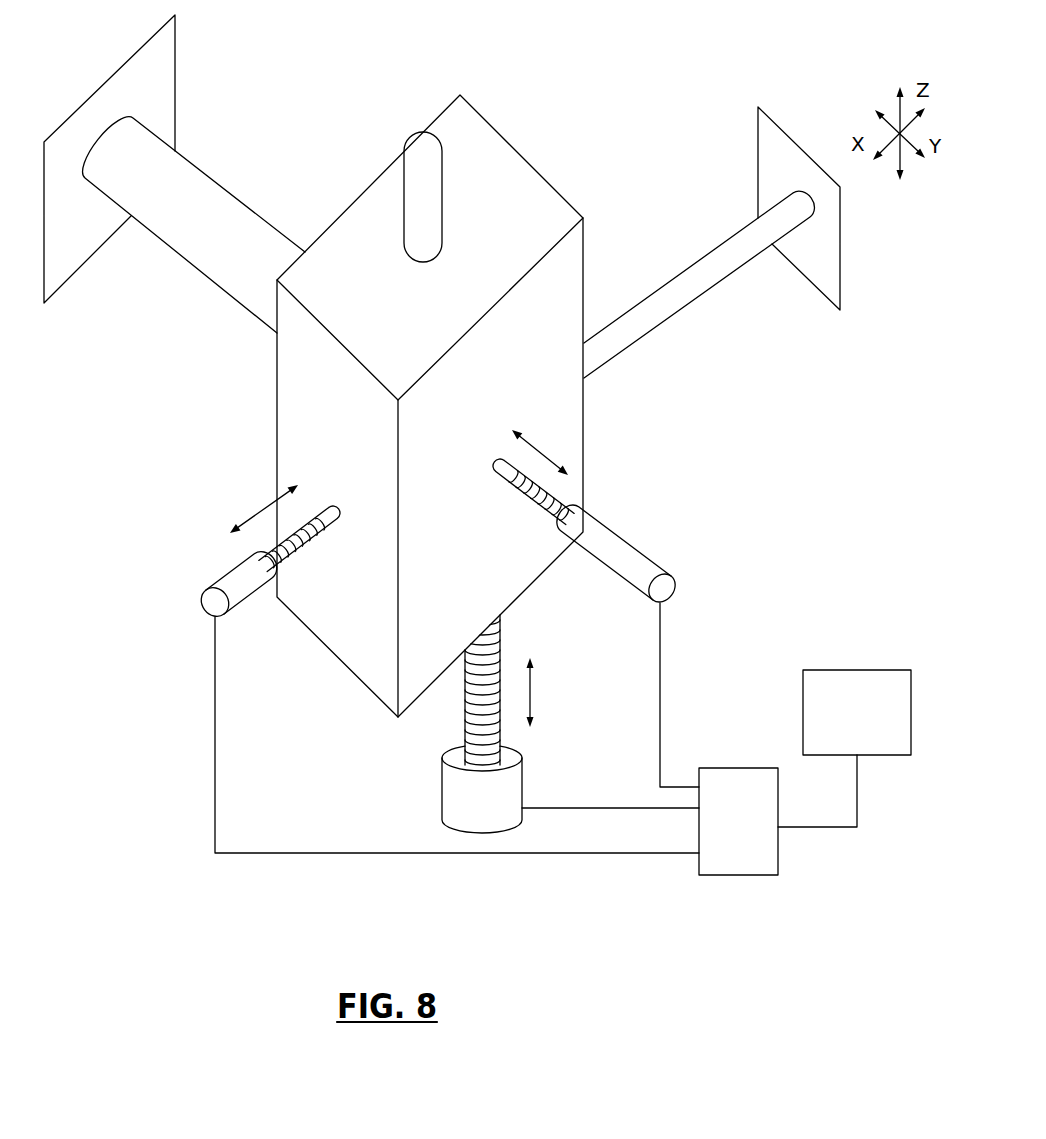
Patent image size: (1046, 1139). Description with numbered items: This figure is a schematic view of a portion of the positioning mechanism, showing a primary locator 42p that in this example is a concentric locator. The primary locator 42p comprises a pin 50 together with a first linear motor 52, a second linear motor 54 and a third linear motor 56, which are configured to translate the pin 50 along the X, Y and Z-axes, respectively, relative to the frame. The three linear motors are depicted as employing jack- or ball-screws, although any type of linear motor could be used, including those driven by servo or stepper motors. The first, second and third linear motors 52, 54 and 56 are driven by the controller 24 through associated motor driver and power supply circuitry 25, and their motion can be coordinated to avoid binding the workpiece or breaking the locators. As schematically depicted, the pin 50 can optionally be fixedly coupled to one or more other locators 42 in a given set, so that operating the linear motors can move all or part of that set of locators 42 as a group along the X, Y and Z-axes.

The locator 42 is at (160, 82).
The primary locator 42p is at (570, 395).
The pin 50 is at (442, 178).
The first linear motor 52 is at (232, 578).
The second linear motor 54 is at (620, 547).
The third linear motor 56 is at (508, 778).
The workstation controller 24 is at (911, 698).
The motor driver and power supply circuitry 25 is at (738, 875).